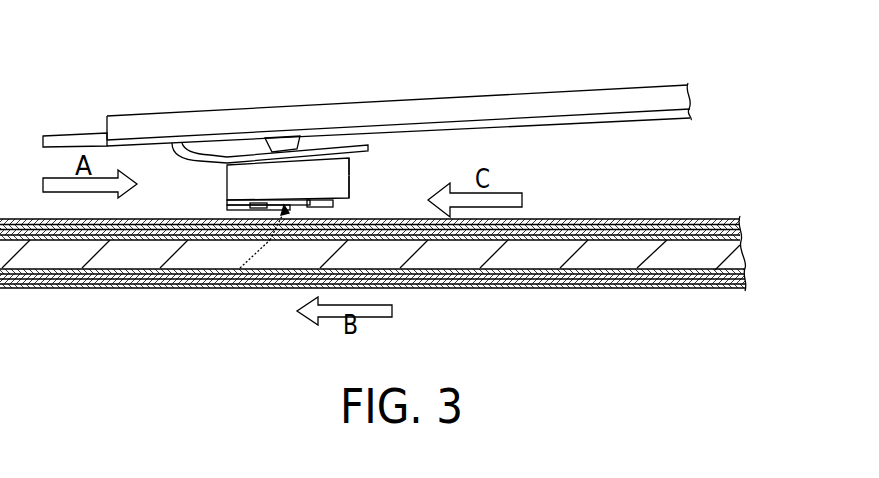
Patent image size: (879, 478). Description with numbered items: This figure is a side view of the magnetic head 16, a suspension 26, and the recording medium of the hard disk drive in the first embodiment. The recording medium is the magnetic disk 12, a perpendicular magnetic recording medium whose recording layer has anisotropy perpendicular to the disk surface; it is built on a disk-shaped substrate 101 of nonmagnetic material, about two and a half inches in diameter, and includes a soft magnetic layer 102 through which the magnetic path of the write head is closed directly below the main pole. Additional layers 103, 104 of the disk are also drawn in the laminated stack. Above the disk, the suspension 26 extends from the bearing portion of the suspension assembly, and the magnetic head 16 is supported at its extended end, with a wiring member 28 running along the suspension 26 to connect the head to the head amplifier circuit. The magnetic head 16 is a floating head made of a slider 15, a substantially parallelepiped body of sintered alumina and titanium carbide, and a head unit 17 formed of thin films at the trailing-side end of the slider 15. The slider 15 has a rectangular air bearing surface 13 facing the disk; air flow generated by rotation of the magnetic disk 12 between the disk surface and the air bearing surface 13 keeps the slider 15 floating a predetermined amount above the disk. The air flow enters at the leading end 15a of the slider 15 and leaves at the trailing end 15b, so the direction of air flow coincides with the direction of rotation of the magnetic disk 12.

The magnetic disk 12 is at (406, 236).
The ABS (air bearing surface) 13 is at (270, 240).
The slider 15 is at (260, 175).
The leading end 15a is at (366, 172).
The trailing end 15b is at (227, 199).
The magnetic head 16 is at (370, 178).
The head unit 17 is at (227, 177).
The suspension 26 is at (552, 102).
The wiring member 28 is at (588, 120).
The substrate 101 is at (625, 262).
The soft magnetic layer 102 is at (740, 248).
The adhesive layer 103 is at (666, 219).
The surface film 104 is at (738, 219).